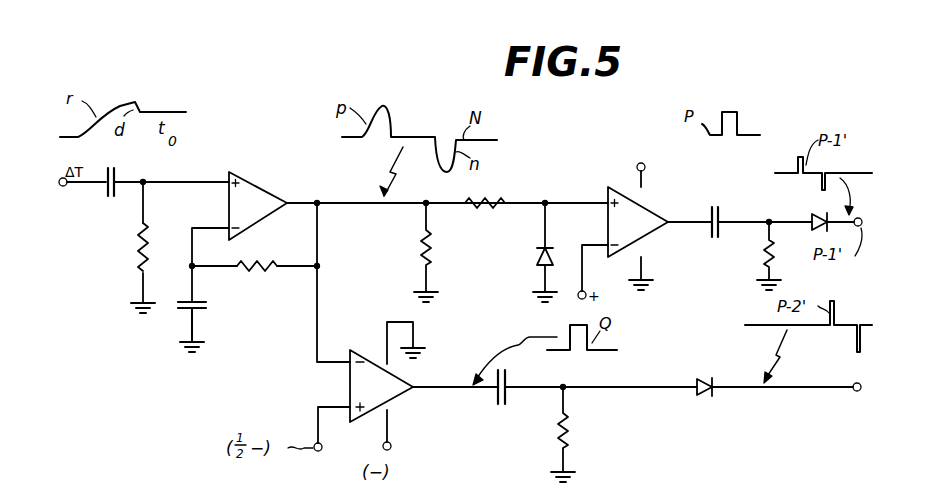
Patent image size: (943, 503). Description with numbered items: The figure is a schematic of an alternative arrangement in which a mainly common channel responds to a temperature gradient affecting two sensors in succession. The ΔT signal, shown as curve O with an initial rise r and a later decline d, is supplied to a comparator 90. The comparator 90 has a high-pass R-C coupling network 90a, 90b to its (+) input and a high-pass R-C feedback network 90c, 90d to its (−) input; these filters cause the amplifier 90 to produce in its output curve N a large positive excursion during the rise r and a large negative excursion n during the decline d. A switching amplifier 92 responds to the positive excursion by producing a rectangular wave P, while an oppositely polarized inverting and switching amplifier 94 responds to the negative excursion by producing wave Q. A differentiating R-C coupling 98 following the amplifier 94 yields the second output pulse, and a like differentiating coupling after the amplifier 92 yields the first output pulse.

The comparator 90 is at (268, 190).
The high-pass R-C coupling network capacitor 90a is at (111, 200).
The high-pass R-C coupling network resistor 90b is at (143, 250).
The high-pass R-C feedback network resistor 90c is at (250, 265).
The high-pass R-C feedback network capacitor 90d is at (206, 304).
The switching amplifier 92 is at (650, 213).
The inverting and switching amplifier 94 is at (352, 352).
The differentiating R-C coupling 98 is at (550, 457).